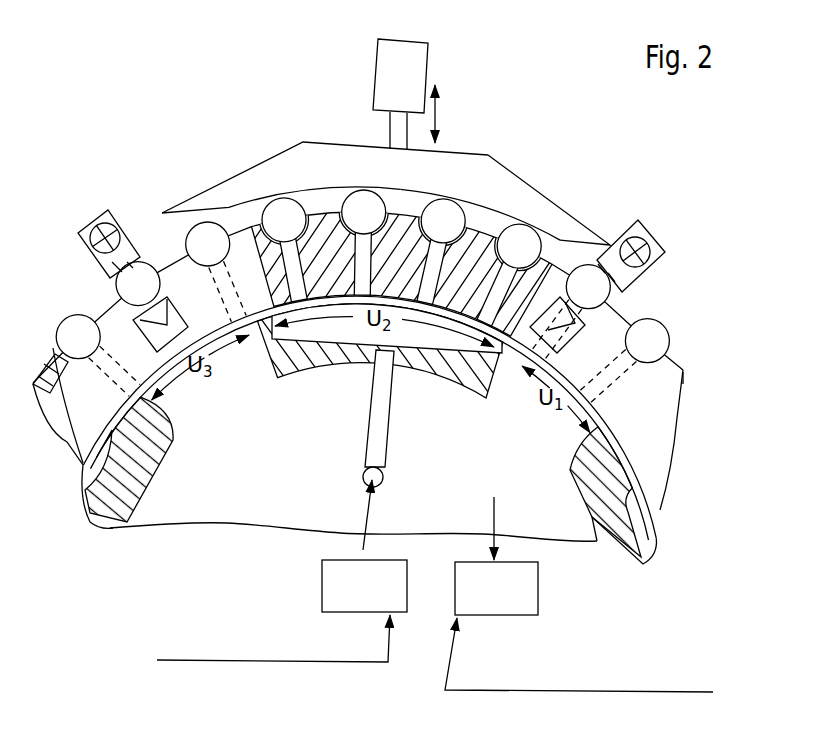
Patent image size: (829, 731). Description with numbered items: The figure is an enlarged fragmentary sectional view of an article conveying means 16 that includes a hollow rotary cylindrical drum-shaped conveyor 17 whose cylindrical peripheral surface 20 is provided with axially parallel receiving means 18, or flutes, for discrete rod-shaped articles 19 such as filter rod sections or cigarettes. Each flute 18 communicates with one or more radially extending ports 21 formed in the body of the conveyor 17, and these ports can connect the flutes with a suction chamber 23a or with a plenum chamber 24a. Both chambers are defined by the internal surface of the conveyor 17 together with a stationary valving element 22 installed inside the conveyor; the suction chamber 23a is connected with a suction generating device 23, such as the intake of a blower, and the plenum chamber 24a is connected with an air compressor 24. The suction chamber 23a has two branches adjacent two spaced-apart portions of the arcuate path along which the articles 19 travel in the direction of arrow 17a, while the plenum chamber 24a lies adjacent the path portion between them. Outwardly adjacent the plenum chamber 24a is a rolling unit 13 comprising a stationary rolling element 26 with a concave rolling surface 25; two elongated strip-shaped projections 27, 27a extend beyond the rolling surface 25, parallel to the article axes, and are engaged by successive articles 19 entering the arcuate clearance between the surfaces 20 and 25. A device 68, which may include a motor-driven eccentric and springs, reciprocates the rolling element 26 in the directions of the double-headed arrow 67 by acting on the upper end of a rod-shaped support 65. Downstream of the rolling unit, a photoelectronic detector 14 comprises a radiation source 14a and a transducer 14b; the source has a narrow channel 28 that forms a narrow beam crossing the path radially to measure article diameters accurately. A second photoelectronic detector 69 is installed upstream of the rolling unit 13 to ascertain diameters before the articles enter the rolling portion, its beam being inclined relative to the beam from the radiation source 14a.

The rolling unit 13 is at (446, 132).
The photoelectronic detector 14 is at (89, 208).
The radiation source 14a is at (80, 226).
The transducer 14b is at (175, 305).
The article conveying means 16 is at (668, 273).
The conveyor 17 is at (42, 375).
The arrow 17a is at (678, 306).
The receiving means 18 is at (50, 412).
The rod-shaped articles 19 is at (72, 345).
The cylindrical peripheral surface 20 is at (683, 374).
The ports 21 is at (113, 375).
The valving element 22 is at (622, 480).
The suction generating device 23 is at (521, 607).
The suction chamber 23a is at (545, 517).
The air compressor 24 is at (338, 595).
The plenum chamber 24a is at (437, 343).
The rolling surface 25 is at (516, 219).
The rolling element 26 is at (357, 163).
The projection 27 is at (470, 199).
The projection 27a is at (311, 182).
The channel 28 is at (100, 277).
The support 65 is at (402, 134).
The double-headed arrow 67 is at (440, 112).
The device 68 is at (392, 60).
The second photoelectronic detector 69 is at (630, 214).